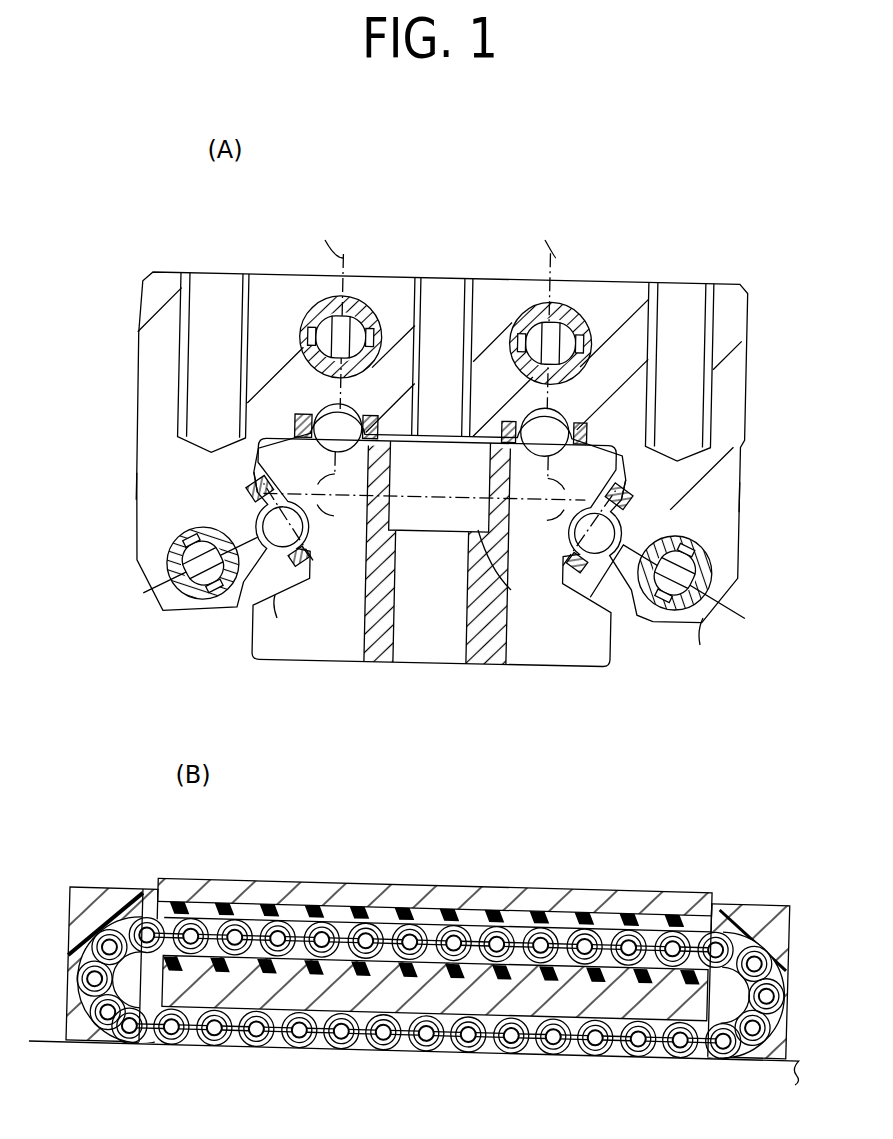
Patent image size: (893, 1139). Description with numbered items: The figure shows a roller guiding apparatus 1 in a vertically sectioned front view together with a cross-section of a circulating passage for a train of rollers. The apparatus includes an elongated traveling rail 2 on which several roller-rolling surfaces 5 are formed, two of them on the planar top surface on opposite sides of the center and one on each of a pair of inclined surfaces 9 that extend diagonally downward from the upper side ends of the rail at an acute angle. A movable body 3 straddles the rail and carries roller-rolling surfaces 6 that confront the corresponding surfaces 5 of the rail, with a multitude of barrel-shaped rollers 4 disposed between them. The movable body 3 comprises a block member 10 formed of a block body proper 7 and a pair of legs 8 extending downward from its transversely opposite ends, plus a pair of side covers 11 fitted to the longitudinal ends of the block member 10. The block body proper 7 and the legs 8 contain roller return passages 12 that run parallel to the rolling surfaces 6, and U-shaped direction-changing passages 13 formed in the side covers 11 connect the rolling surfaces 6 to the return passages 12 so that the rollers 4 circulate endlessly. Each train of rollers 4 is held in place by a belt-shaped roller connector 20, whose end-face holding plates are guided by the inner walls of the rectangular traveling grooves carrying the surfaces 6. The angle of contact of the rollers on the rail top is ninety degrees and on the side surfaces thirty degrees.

The roller guiding apparatus 1 is at (716, 219).
The traveling rail 2 is at (560, 672).
The movable body 3 is at (760, 337).
The rollers 4 is at (560, 420).
The roller-rolling surfaces 5 is at (368, 1095).
The roller-rolling surfaces 6 is at (362, 418).
The block body proper 7 is at (433, 885).
The legs 8 is at (173, 492).
The inclined surfaces 9 is at (232, 486).
The block member 10 is at (611, 272).
The side covers 11 is at (88, 888).
The roller return passages 12 is at (368, 290).
The direction-changing passages 13 is at (72, 978).
The roller connector 20 is at (512, 918).